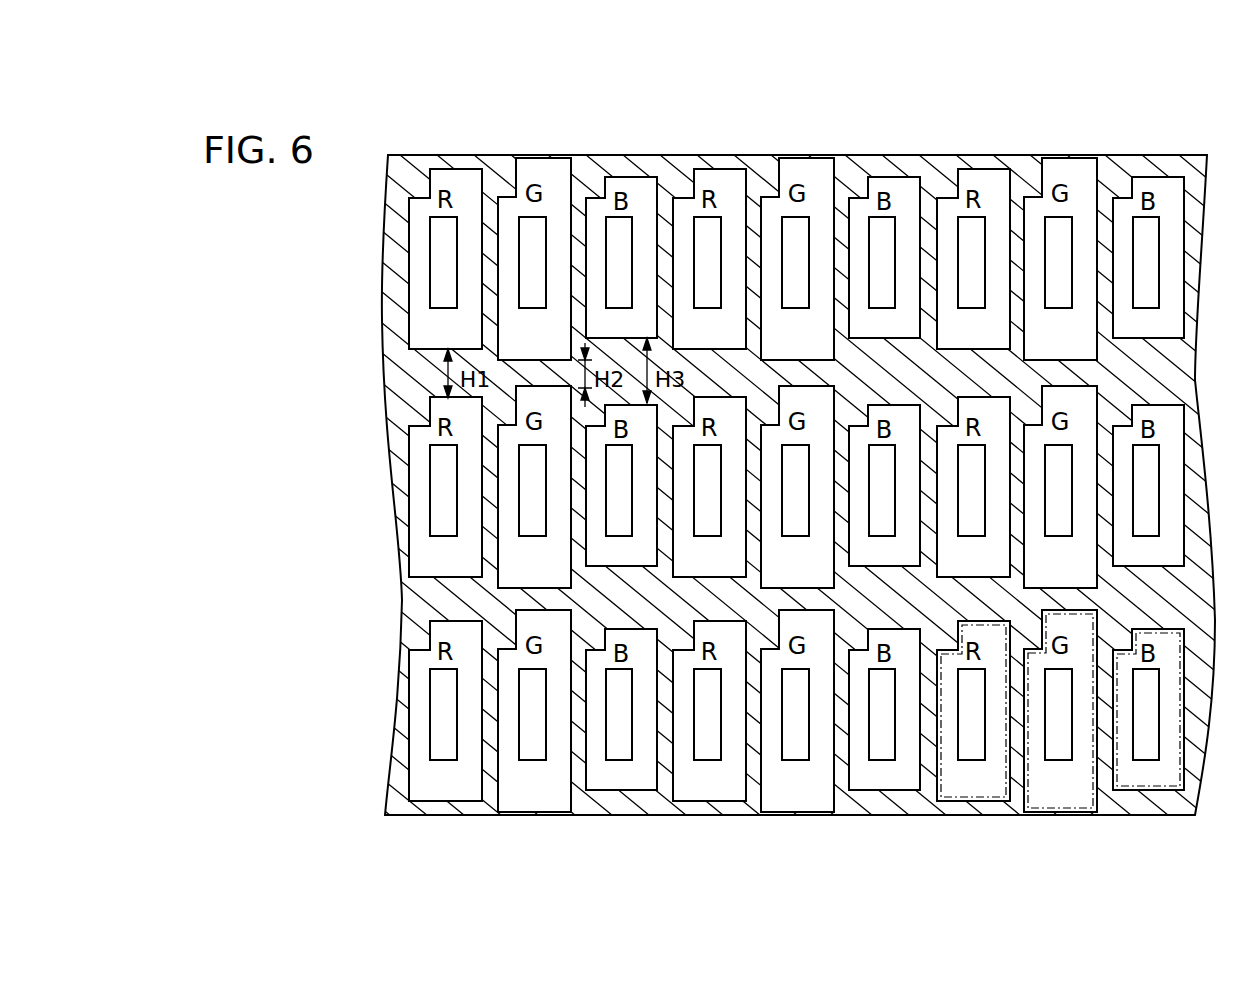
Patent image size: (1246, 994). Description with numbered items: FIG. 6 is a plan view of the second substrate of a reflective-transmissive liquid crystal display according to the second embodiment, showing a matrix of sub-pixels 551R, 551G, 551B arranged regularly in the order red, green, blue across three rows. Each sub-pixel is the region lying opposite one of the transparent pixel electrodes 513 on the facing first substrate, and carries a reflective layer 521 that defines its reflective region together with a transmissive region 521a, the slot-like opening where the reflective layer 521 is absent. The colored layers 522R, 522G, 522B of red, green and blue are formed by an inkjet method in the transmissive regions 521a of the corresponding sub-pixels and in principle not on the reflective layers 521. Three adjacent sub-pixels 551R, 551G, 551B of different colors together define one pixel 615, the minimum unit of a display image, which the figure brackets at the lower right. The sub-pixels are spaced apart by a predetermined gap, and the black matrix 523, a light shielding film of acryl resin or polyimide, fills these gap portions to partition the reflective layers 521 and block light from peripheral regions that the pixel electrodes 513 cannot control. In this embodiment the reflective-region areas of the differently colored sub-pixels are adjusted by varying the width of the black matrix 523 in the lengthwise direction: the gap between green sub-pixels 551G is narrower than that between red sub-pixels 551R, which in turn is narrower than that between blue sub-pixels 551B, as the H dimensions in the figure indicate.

The pixel electrode 513 is at (414, 170).
The reflective layer 521 is at (468, 188).
The transmissive region 521a is at (717, 240).
The red colored layer 522R is at (972, 250).
The green colored layer 522G is at (1063, 252).
The blue colored layer 522B is at (1150, 240).
The black matrix 523 is at (413, 368).
The red sub-pixel 551R is at (968, 795).
The green sub-pixel 551G is at (1045, 805).
The blue sub-pixel 551B is at (1145, 755).
The pixel 615 is at (1055, 768).